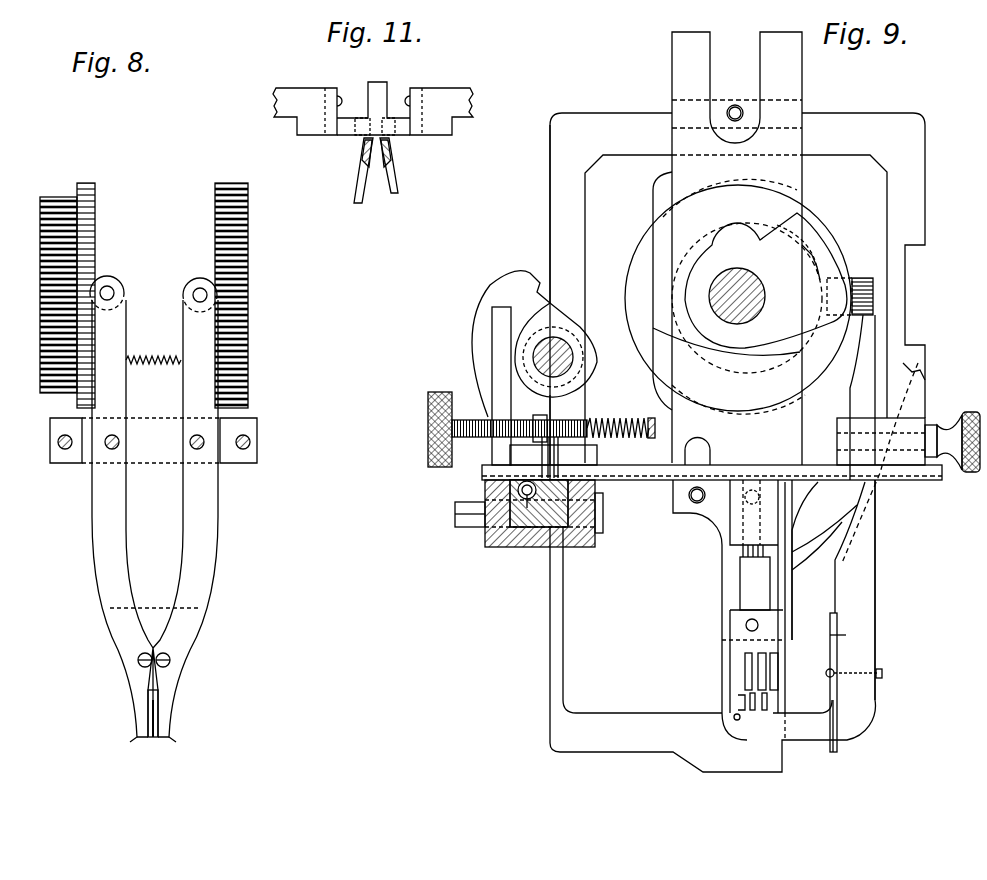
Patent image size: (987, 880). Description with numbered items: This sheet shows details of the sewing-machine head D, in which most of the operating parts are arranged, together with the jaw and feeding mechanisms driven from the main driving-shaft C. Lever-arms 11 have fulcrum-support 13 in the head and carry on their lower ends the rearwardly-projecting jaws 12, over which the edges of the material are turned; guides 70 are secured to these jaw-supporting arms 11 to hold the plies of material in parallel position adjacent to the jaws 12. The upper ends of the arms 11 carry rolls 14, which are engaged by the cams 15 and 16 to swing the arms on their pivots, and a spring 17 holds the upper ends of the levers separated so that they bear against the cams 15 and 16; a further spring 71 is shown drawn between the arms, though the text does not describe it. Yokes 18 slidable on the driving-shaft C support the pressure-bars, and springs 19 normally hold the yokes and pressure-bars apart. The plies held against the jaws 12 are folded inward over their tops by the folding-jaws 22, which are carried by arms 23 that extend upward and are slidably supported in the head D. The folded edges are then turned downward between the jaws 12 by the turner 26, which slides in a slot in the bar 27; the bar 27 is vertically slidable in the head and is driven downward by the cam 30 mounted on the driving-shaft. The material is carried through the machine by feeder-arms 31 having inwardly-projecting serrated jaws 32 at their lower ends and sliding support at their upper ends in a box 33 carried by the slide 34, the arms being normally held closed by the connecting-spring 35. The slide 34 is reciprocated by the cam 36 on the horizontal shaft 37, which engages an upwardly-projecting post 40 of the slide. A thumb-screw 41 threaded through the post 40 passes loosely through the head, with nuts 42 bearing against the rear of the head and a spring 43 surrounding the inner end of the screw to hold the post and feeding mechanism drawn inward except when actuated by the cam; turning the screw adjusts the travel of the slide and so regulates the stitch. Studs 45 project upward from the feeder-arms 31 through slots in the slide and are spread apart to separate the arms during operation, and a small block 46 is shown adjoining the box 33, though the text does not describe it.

In FIG. 8, the lever-arms 11 is at (115, 618).
In FIG. 9, the lever-arms 11 is at (860, 597).
In FIG. 8, the jaws 12 is at (148, 727).
In FIG. 11, the jaws 12 is at (363, 160).
In FIG. 9, the jaws 12 is at (805, 733).
In FIG. 8, the fulcrum-support 13 is at (190, 442).
In FIG. 8, the rolls 14 is at (184, 294).
In FIG. 9, the rolls 14 is at (855, 278).
In FIG. 8, the cam 15 is at (92, 228).
In FIG. 8, the cam 16 is at (240, 226).
In FIG. 9, the cam 16 is at (822, 357).
In FIG. 9, the spring 17 is at (780, 690).
In FIG. 9, the yokes 18 is at (748, 110).
In FIG. 9, the springs 19 is at (736, 105).
In FIG. 11, the folding-jaws 22 is at (350, 116).
In FIG. 9, the folding-jaws 22 is at (737, 701).
In FIG. 11, the arms 23 is at (300, 123).
In FIG. 9, the arms 23 is at (887, 510).
In FIG. 11, the turner 26 is at (378, 88).
In FIG. 9, the turner 26 is at (752, 643).
In FIG. 9, the bar 27 is at (795, 174).
In FIG. 9, the cam 30 is at (812, 247).
In FIG. 9, the feeder-arms 31 is at (563, 606).
In FIG. 9, the serrated jaws 32 is at (770, 768).
In FIG. 9, the box 33 is at (485, 542).
In FIG. 9, the slide 34 is at (482, 470).
In FIG. 9, the connecting-spring 35 is at (525, 478).
In FIG. 9, the cam 36 is at (553, 318).
In FIG. 9, the shaft 37 is at (560, 372).
In FIG. 9, the post 40 is at (492, 360).
In FIG. 9, the thumb-screw 41 is at (428, 418).
In FIG. 9, the nuts 42 is at (538, 415).
In FIG. 9, the spring 43 is at (630, 404).
In FIG. 9, the studs 45 is at (558, 445).
In FIG. 9, the block 46 is at (455, 518).
In FIG. 8, the guides 70 is at (168, 708).
In FIG. 9, the guides 70 is at (838, 745).
In FIG. 8, the spring 71 is at (162, 364).
In FIG. 9, the main driving-shaft C is at (765, 305).
In FIG. 9, the head D is at (861, 120).